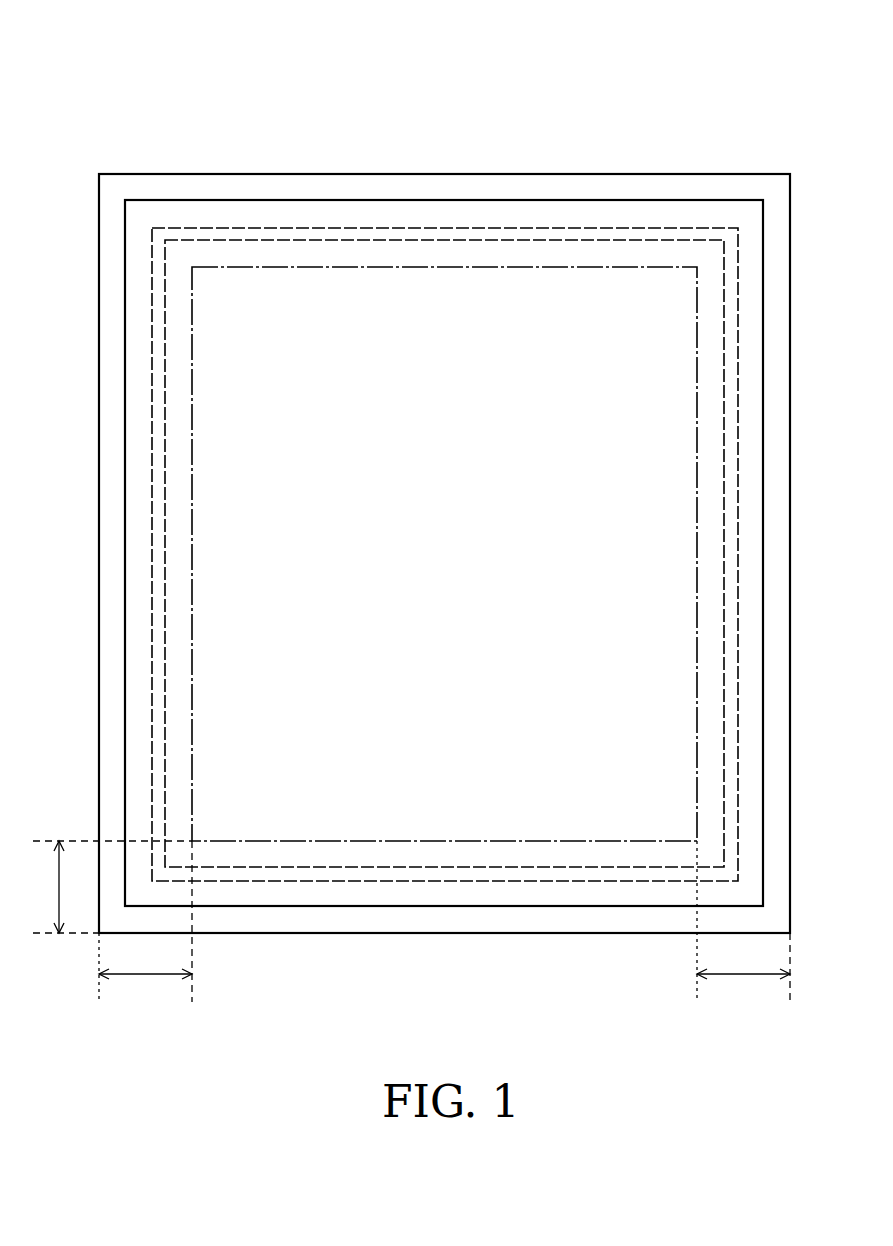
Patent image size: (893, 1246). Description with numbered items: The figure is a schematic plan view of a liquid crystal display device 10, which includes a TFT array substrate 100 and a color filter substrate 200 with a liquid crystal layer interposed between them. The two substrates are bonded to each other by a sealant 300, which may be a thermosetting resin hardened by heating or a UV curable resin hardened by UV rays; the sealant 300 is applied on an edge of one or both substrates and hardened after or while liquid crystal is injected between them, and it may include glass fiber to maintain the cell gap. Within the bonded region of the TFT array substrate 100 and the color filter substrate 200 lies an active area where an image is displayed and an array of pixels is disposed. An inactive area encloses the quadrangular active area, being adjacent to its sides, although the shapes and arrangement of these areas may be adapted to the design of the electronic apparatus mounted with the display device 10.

The liquid crystal display device 10 is at (73, 59).
The TFT array substrate 100 is at (548, 173).
The color filter substrate 200 is at (700, 200).
The sealant 300 is at (393, 233).